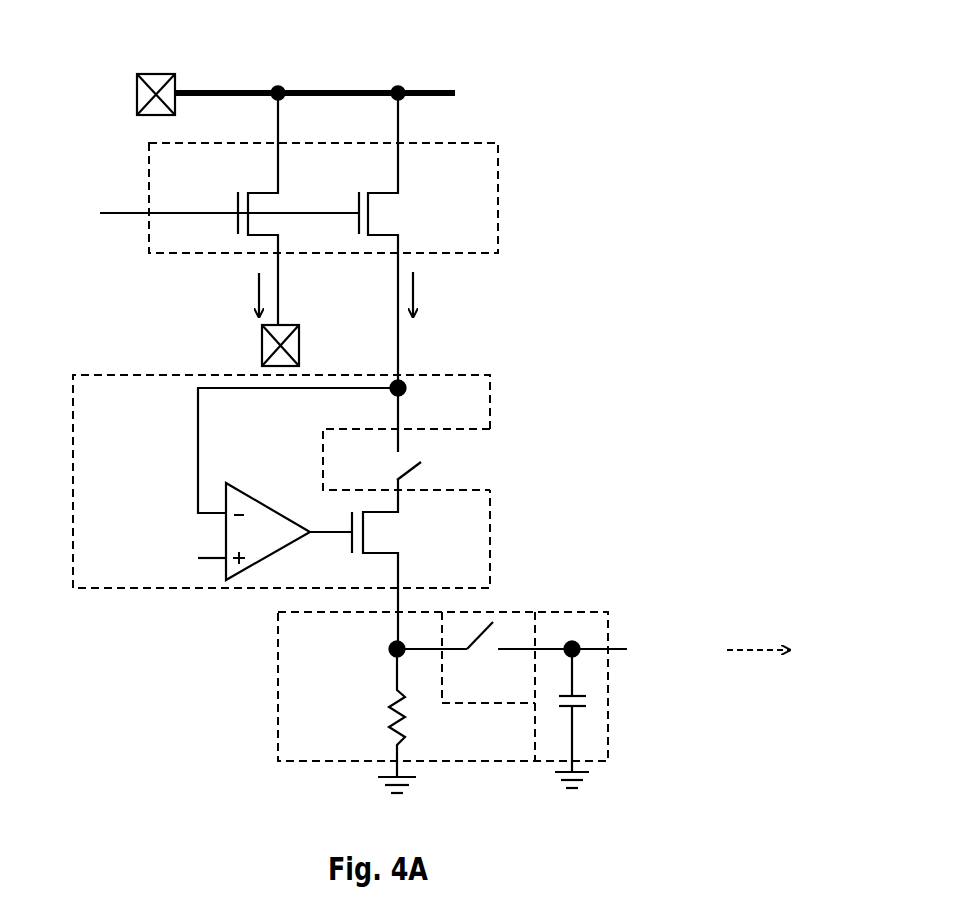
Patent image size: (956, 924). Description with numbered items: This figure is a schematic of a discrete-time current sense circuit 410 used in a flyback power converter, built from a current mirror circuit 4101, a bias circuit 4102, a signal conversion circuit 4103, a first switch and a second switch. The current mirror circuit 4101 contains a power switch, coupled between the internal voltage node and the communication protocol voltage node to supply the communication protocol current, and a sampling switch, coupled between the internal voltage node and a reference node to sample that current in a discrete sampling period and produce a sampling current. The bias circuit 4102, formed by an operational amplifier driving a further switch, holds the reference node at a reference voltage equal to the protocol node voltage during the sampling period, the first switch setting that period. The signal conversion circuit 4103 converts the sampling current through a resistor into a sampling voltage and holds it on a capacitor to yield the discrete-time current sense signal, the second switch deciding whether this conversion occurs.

The discrete-time current sense circuit 410 is at (677, 56).
The current mirror circuit 4101 is at (500, 160).
The bias circuit 4102 is at (158, 426).
The signal conversion circuit 4103 is at (352, 747).